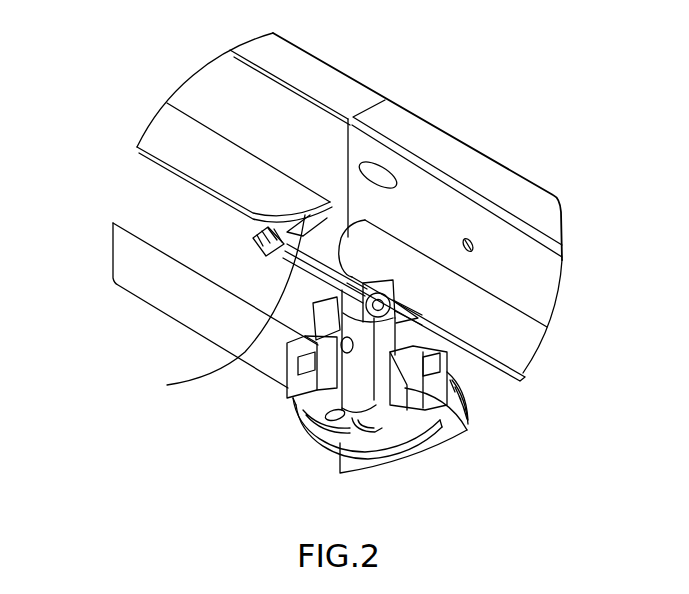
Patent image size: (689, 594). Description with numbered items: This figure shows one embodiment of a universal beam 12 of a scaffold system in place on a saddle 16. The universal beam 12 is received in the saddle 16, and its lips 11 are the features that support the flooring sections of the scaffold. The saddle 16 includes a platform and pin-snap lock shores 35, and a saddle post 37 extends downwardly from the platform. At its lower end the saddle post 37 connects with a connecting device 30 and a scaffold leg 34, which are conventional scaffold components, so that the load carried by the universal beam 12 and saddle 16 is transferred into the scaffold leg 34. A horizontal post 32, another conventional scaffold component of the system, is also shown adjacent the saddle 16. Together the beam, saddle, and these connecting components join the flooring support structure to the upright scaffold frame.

The lips 11 is at (167, 129).
The universal beam 12 is at (193, 77).
The saddle 16 is at (167, 385).
The connecting device 30 is at (293, 426).
The horizontal post 32 is at (143, 302).
The scaffold leg 34 is at (357, 463).
The pin-snap lock shore 35 is at (250, 240).
The saddle post 37 is at (447, 387).